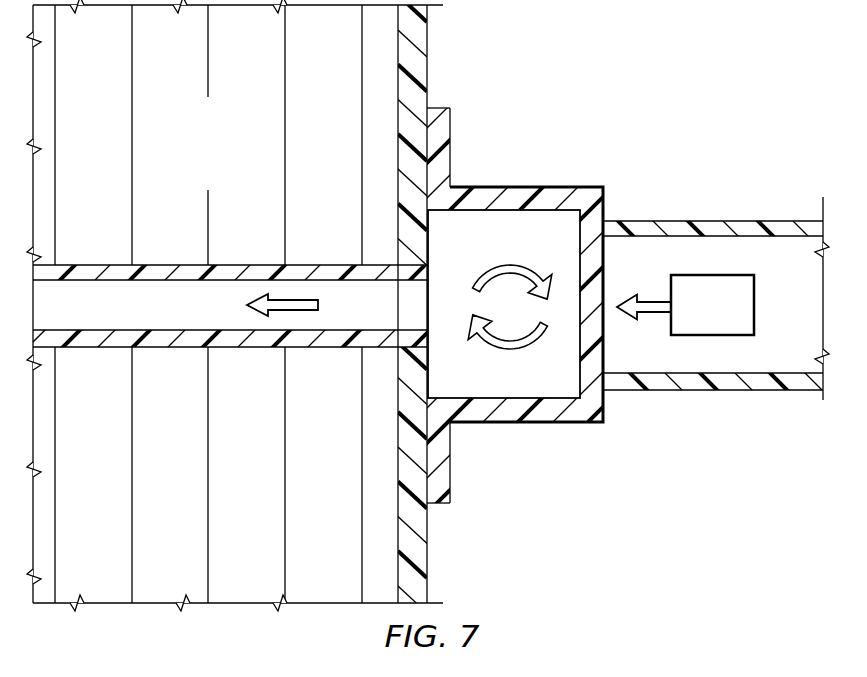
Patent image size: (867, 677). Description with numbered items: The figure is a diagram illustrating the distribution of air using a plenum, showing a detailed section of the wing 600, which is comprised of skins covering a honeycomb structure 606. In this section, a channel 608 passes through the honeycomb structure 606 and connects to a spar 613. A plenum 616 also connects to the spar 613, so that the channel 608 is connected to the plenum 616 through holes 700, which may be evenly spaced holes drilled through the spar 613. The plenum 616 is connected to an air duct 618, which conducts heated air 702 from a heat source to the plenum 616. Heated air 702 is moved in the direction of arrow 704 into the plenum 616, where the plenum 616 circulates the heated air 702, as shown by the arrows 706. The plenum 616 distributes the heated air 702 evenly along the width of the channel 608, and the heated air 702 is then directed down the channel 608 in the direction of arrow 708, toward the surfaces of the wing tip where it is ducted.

The wing 600 is at (574, 59).
The honeycomb structure 606 is at (226, 177).
The channel 608 is at (167, 282).
The spar 613 is at (430, 78).
The plenum 616 is at (523, 187).
The air duct 618 is at (709, 221).
The holes 700 is at (415, 303).
The heated air 702 is at (755, 306).
The arrow 704 is at (653, 298).
The arrows 706 is at (559, 251).
The arrow 708 is at (305, 294).